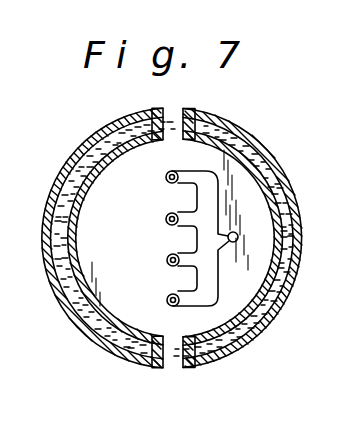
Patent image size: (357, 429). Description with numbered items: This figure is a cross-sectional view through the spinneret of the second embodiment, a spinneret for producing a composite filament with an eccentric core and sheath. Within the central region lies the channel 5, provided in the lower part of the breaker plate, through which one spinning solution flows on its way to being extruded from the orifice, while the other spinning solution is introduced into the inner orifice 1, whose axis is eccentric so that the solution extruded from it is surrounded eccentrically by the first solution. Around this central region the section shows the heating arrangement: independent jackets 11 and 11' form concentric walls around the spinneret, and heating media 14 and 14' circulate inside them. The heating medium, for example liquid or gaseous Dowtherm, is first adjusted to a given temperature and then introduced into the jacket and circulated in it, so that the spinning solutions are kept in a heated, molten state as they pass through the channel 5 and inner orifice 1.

The inner orifice 1 is at (167, 260).
The channel 5 is at (176, 214).
The jacket 11 is at (172, 254).
The jacket 11' is at (102, 252).
The heating medium 14 is at (203, 238).
The heating medium 14' is at (107, 252).